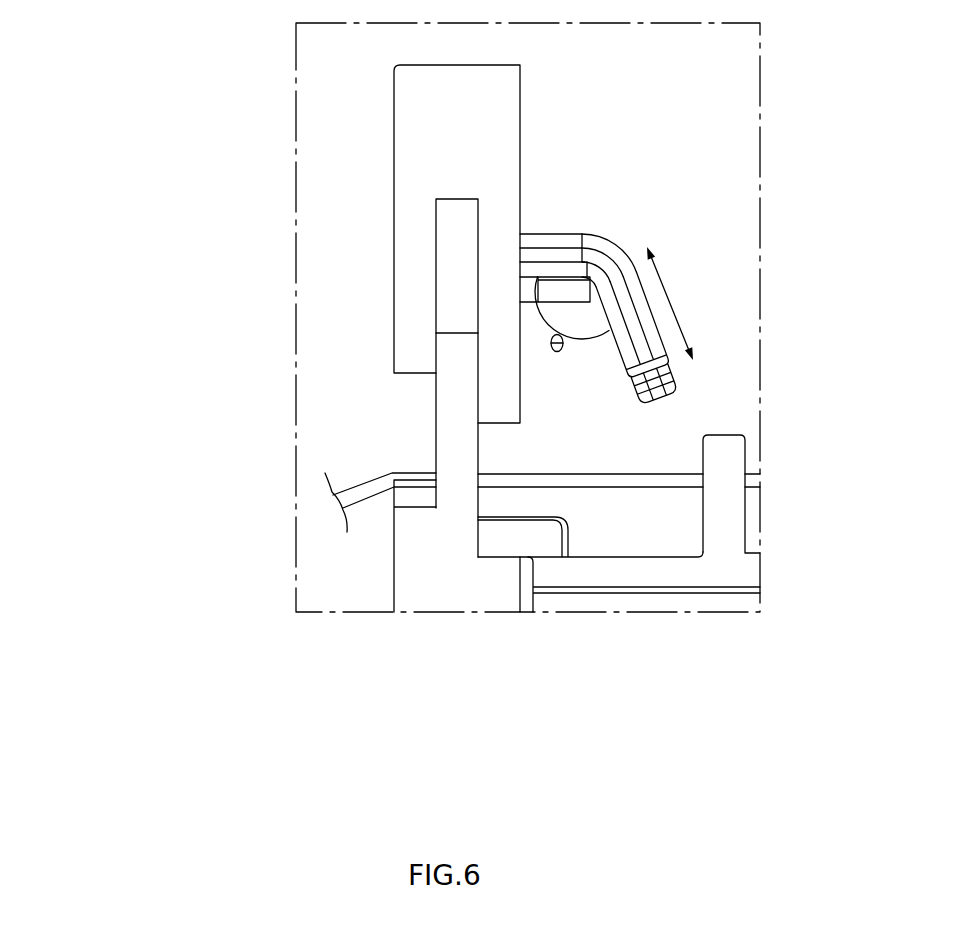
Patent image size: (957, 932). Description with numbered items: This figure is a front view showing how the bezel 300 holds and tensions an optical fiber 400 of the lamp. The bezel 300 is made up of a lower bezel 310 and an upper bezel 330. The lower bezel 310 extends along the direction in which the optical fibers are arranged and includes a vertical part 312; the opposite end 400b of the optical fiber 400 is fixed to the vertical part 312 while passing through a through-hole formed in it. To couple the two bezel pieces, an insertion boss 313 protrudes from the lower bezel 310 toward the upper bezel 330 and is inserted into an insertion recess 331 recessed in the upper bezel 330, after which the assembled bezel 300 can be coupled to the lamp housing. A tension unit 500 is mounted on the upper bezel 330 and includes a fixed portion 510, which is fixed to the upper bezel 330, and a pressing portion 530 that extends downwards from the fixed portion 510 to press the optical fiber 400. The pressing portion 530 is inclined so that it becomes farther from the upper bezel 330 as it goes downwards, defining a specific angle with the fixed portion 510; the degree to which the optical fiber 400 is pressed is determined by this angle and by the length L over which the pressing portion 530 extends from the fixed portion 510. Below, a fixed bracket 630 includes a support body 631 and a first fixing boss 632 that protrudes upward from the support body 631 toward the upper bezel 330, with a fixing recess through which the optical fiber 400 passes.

The bezel 300 is at (127, 577).
The lower bezel 310 is at (221, 587).
The vertical part 312 is at (405, 583).
The insertion boss 313 is at (447, 353).
The upper bezel 330 is at (408, 163).
The insertion recess 331 is at (437, 237).
The optical fiber 400 is at (823, 348).
The opposite end of the optical fiber 400b is at (652, 479).
The tension unit 500 is at (658, 124).
The fixed portion 510 is at (560, 257).
The pressing portion 530 is at (622, 298).
The fixed bracket 630 is at (634, 688).
The support body 631 is at (658, 573).
The first fixing boss 632 is at (735, 517).
The length L is at (673, 300).